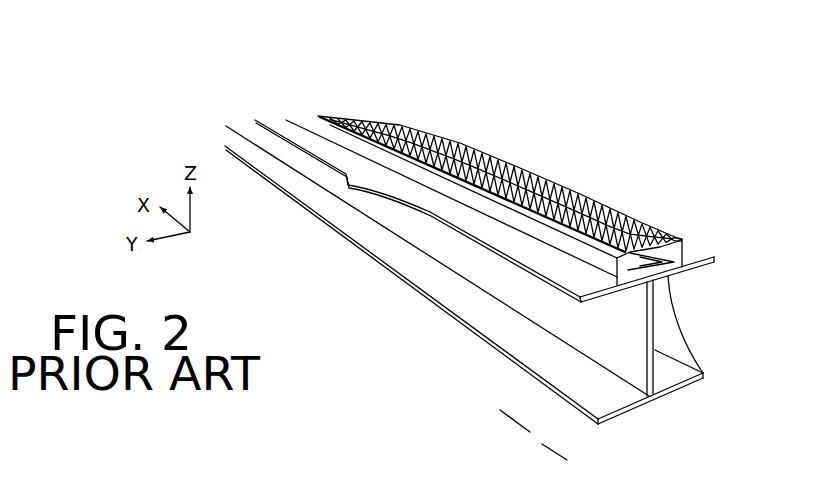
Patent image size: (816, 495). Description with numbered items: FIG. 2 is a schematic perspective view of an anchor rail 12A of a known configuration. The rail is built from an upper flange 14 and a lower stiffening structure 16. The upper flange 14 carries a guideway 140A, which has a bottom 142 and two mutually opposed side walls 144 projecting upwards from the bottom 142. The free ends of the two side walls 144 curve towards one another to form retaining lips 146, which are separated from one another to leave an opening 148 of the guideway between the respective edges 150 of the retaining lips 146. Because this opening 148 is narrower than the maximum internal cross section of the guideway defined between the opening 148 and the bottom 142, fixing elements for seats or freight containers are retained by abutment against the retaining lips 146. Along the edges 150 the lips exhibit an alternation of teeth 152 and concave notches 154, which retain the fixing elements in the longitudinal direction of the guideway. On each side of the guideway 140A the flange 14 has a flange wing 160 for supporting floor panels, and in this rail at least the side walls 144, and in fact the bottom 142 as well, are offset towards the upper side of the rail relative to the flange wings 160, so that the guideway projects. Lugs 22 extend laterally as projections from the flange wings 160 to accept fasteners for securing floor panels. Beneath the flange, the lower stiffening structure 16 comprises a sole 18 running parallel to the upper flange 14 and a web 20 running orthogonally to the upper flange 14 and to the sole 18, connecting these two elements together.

The anchor rail 12A is at (522, 84).
The upper flange 14 is at (713, 250).
The lower stiffening structure 16 is at (533, 437).
The sole 18 is at (572, 404).
The web 20 is at (553, 392).
The lugs 22 is at (485, 150).
The guideway 140A is at (515, 166).
The bottom 142 is at (662, 240).
The side walls 144 is at (581, 190).
The retaining lips 146 is at (673, 280).
The opening 148 is at (464, 140).
The edges 150 is at (425, 140).
The teeth 152 is at (390, 272).
The concave notches 154 is at (353, 248).
The flange wings 160 is at (711, 264).